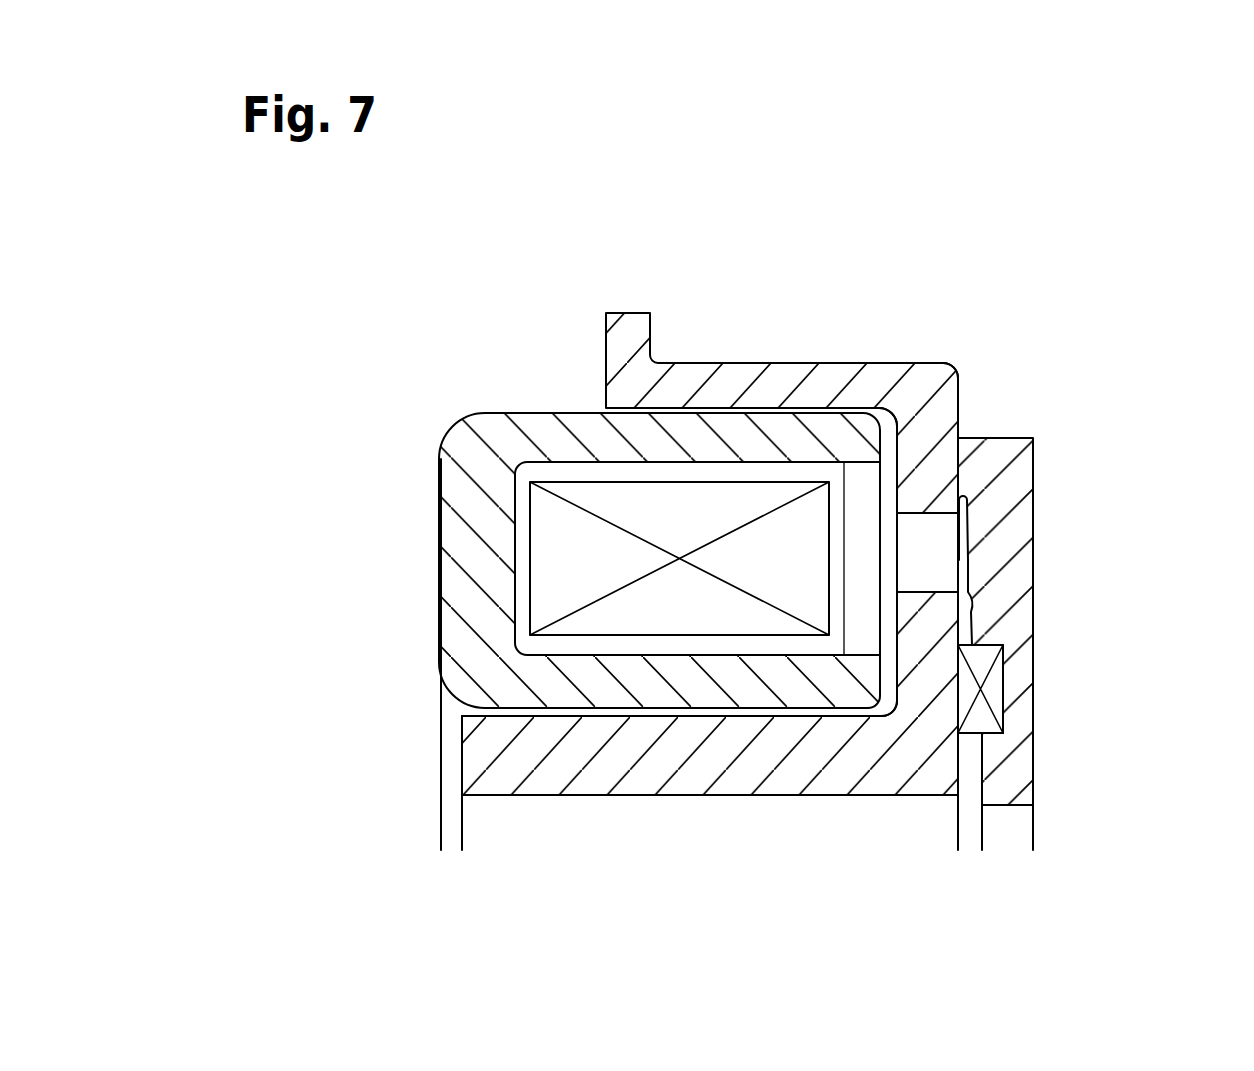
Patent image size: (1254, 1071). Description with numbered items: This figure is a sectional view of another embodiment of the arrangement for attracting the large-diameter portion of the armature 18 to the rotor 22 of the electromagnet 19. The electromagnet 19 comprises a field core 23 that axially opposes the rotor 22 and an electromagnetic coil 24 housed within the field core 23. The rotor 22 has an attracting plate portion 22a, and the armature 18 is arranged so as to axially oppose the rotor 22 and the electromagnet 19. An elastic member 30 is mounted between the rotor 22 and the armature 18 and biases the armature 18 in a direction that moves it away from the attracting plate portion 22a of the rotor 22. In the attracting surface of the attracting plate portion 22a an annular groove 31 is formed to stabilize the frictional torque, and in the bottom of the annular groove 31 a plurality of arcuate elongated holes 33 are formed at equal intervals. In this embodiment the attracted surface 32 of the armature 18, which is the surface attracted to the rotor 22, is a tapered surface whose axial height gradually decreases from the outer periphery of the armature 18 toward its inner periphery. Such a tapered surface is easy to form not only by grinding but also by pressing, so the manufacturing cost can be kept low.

The armature 18 is at (1007, 611).
The electromagnet 19 is at (513, 412).
The rotor 22 is at (793, 362).
The attracting plate portion 22a is at (940, 405).
The field core 23 is at (452, 470).
The electromagnetic coil 24 is at (557, 563).
The elastic member 30 is at (985, 718).
The annular groove 31 is at (965, 502).
The attracted surface 32 is at (978, 617).
The elongated holes 33 is at (925, 548).